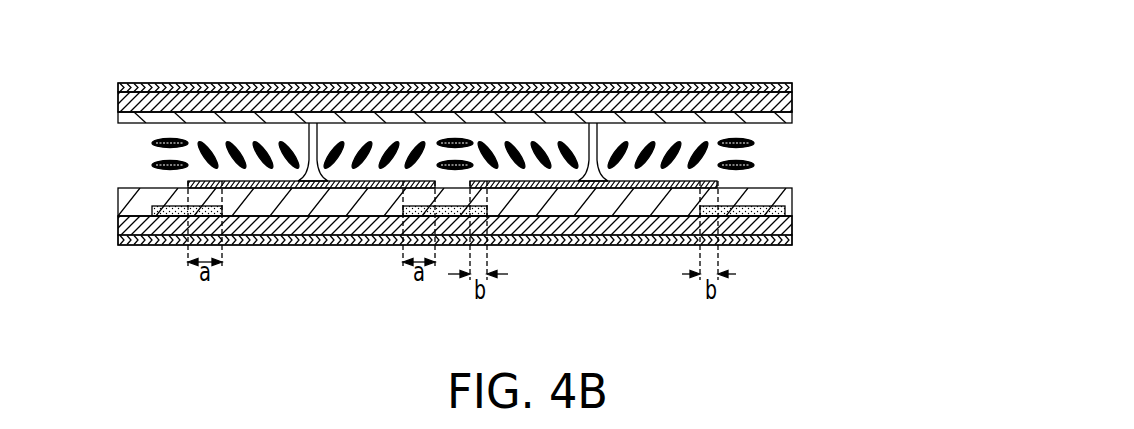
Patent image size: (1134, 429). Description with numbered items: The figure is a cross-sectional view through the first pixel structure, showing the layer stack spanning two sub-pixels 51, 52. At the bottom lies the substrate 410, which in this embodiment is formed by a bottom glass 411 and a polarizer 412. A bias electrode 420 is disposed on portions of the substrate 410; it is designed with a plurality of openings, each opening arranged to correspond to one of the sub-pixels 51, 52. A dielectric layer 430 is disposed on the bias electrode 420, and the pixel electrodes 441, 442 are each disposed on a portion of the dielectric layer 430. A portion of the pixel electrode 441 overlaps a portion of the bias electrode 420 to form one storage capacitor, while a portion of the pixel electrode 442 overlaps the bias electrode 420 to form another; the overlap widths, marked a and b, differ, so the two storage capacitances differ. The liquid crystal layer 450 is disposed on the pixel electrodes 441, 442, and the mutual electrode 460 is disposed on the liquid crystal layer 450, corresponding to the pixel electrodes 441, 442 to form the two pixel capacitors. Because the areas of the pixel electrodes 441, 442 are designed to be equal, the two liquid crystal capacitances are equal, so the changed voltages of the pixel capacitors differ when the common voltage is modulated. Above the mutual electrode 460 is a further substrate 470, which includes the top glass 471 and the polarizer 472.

The sub-pixel 51 is at (423, 72).
The sub-pixel 52 is at (705, 72).
The substrate 410 is at (887, 207).
The bottom glass 411 is at (796, 224).
The polarizer 412 is at (796, 238).
The bias electrode 420 is at (158, 216).
The dielectric layer 430 is at (795, 192).
The pixel electrode 441 is at (257, 190).
The pixel electrode 442 is at (535, 190).
The liquid crystal layer 450 is at (790, 127).
The mutual electrode 460 is at (797, 117).
The substrate 470 is at (885, 68).
The top glass 471 is at (797, 102).
The polarizer 472 is at (797, 87).